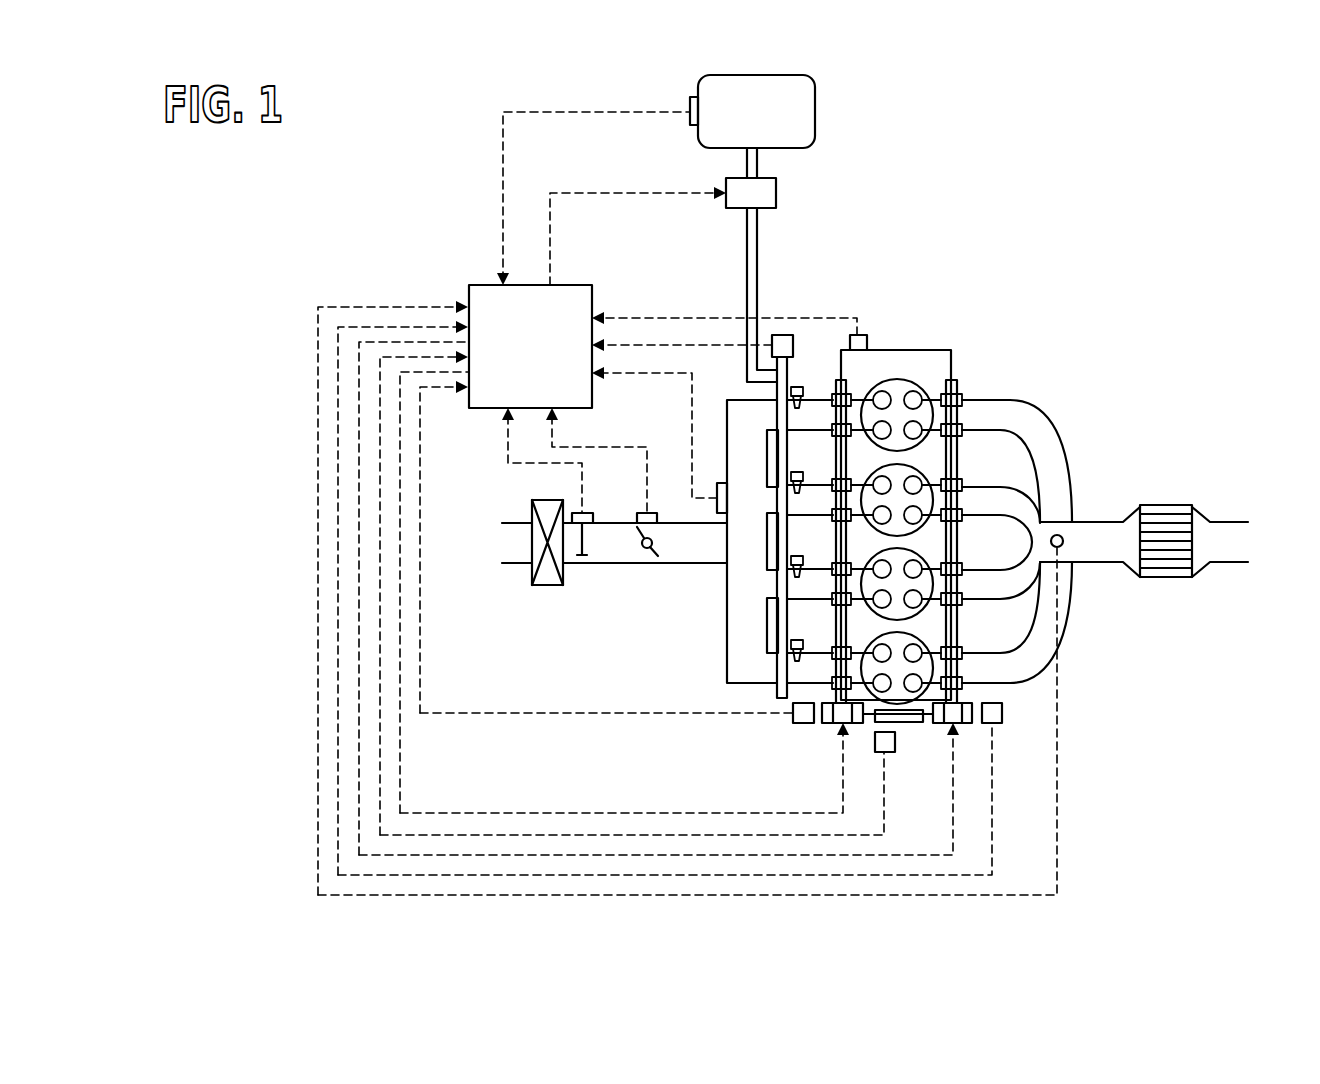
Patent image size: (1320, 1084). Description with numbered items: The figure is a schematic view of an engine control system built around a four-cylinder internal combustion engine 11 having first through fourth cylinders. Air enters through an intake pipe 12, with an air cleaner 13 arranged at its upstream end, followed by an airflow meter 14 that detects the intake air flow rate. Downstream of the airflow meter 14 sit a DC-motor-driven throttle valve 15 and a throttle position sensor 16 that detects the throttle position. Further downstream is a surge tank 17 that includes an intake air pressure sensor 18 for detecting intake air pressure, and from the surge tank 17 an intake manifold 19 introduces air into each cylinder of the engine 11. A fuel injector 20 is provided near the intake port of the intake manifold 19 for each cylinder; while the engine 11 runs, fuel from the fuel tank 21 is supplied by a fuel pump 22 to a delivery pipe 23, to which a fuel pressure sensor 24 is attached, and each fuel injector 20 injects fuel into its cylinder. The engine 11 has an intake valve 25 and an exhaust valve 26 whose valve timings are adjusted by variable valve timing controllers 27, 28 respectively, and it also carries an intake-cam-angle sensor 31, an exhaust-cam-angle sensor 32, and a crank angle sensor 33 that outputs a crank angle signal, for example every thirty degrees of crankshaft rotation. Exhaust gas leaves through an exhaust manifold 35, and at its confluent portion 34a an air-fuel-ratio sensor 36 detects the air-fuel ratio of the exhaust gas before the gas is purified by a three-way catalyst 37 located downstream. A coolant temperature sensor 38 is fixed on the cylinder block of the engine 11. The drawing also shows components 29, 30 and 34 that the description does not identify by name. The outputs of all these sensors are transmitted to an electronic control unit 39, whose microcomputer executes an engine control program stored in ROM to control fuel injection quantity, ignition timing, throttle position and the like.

The engine 11 is at (906, 346).
The intake pipe 12 is at (630, 563).
The air cleaner 13 is at (548, 585).
The airflow meter 14 is at (590, 550).
The throttle valve 15 is at (658, 556).
The throttle position sensor 16 is at (647, 513).
The surge tank 17 is at (727, 660).
The intake air pressure sensor 18 is at (719, 483).
The intake manifold 19 is at (818, 403).
The fuel injector 20 is at (798, 388).
The fuel tank 21 is at (815, 122).
The fuel pump 22 is at (776, 193).
The delivery pipe 23 is at (763, 353).
The fuel pressure sensor 24 is at (789, 335).
The intake valve 25 is at (890, 392).
The exhaust valve 26 is at (920, 392).
The variable valve timing controller 27 is at (858, 723).
The variable valve timing controller 28 is at (965, 723).
The intake variable valve timing mechanism 29 is at (822, 700).
The exhaust port 30 is at (962, 665).
The intake-cam-angle sensor 31 is at (800, 723).
The exhaust-cam-angle sensor 32 is at (1002, 713).
The crank angle sensor 33 is at (895, 742).
The exhaust pipe 34 is at (1097, 522).
The confluent portion 34a is at (1075, 565).
The exhaust manifold 35 is at (1027, 400).
The air-fuel-ratio sensor 36 is at (1063, 541).
The three-way catalyst 37 is at (1167, 505).
The coolant temperature sensor 38 is at (860, 335).
The electronic control unit (ECU) 39 is at (470, 285).